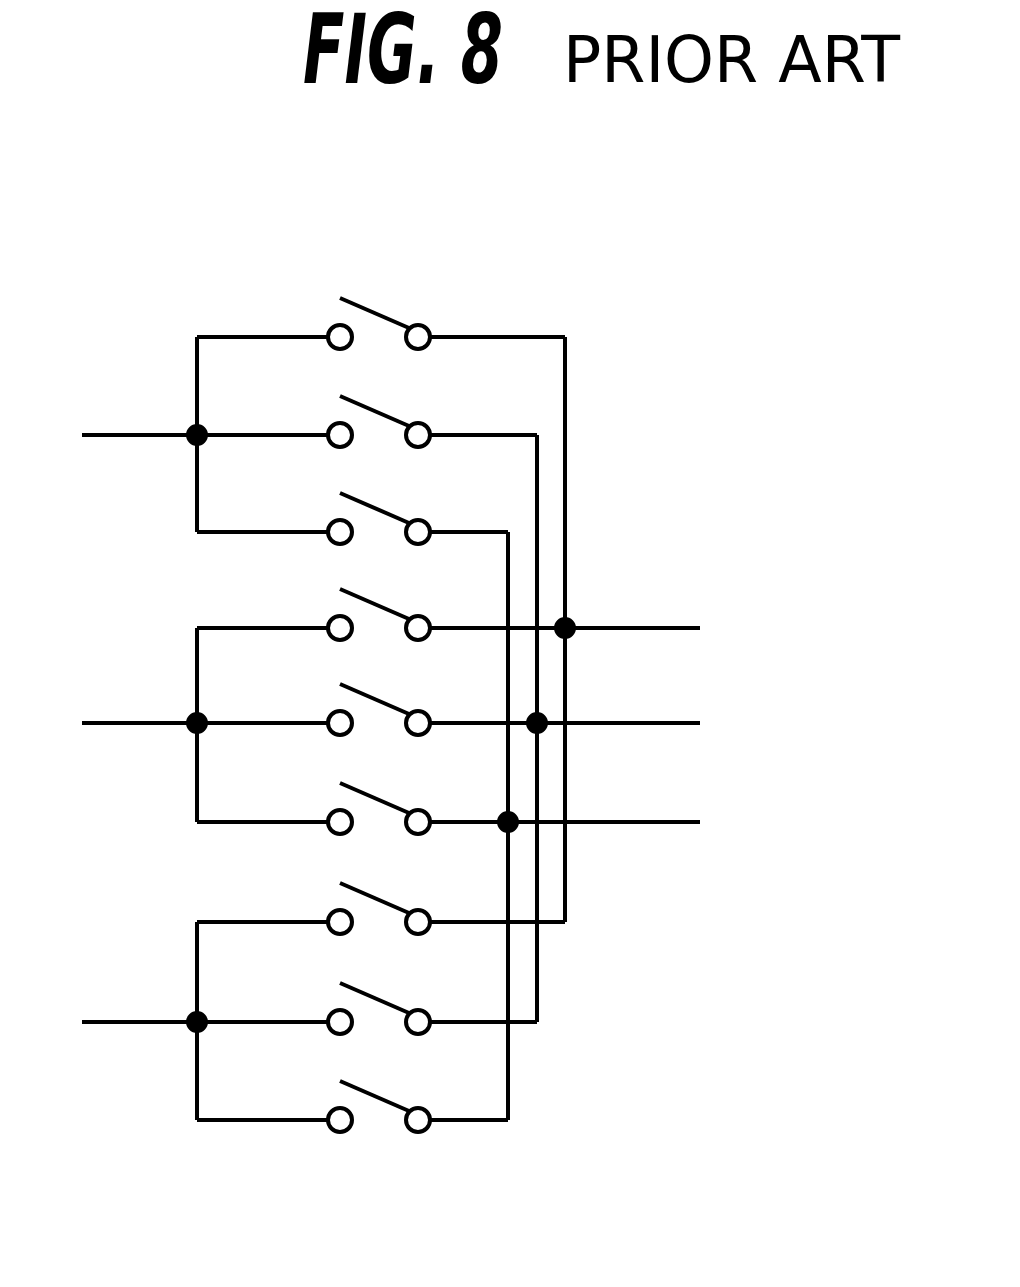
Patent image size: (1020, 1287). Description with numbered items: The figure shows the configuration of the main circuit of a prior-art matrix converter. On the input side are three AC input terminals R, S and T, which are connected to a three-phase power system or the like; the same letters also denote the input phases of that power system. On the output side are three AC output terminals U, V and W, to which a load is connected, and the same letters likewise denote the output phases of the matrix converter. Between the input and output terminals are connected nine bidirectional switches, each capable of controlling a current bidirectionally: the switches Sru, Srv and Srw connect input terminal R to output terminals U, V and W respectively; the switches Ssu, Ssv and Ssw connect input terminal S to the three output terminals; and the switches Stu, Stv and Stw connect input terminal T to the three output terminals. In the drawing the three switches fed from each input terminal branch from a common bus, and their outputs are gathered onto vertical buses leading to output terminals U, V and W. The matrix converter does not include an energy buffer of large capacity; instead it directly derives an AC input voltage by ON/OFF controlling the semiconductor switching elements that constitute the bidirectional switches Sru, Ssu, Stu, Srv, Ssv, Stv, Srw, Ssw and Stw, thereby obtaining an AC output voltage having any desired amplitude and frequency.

The bidirectional switch Sru is at (381, 302).
The bidirectional switch Srv is at (367, 400).
The bidirectional switch Srw is at (352, 497).
The bidirectional switch Ssu is at (448, 593).
The bidirectional switch Ssv is at (448, 688).
The bidirectional switch Ssw is at (448, 787).
The bidirectional switch Stu is at (381, 887).
The bidirectional switch Stv is at (367, 987).
The bidirectional switch Stw is at (352, 1085).
The AC input terminal R is at (124, 434).
The AC input terminal S is at (124, 725).
The AC input terminal T is at (123, 1021).
The AC output terminal U is at (653, 629).
The AC output terminal V is at (637, 728).
The AC output terminal W is at (630, 826).